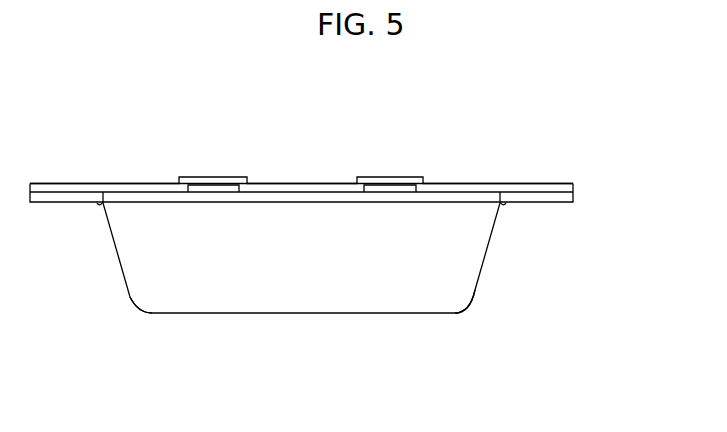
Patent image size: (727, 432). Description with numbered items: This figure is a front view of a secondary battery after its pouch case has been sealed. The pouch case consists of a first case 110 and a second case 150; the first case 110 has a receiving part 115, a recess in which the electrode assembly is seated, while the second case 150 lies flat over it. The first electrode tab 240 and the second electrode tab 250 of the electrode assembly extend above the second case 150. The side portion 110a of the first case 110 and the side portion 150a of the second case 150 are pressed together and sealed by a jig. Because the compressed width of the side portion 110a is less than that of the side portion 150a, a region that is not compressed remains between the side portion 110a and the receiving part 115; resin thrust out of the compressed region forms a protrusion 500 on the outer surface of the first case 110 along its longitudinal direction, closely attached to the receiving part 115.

The first case 110 is at (297, 315).
The side portion of the first case 110a is at (572, 197).
The receiving part 115 is at (478, 290).
The second case 150 is at (290, 179).
The side portion of the second case 150a is at (570, 183).
The first electrode tab 240 is at (383, 184).
The second electrode tab 250 is at (203, 184).
The protrusion 500 is at (505, 203).